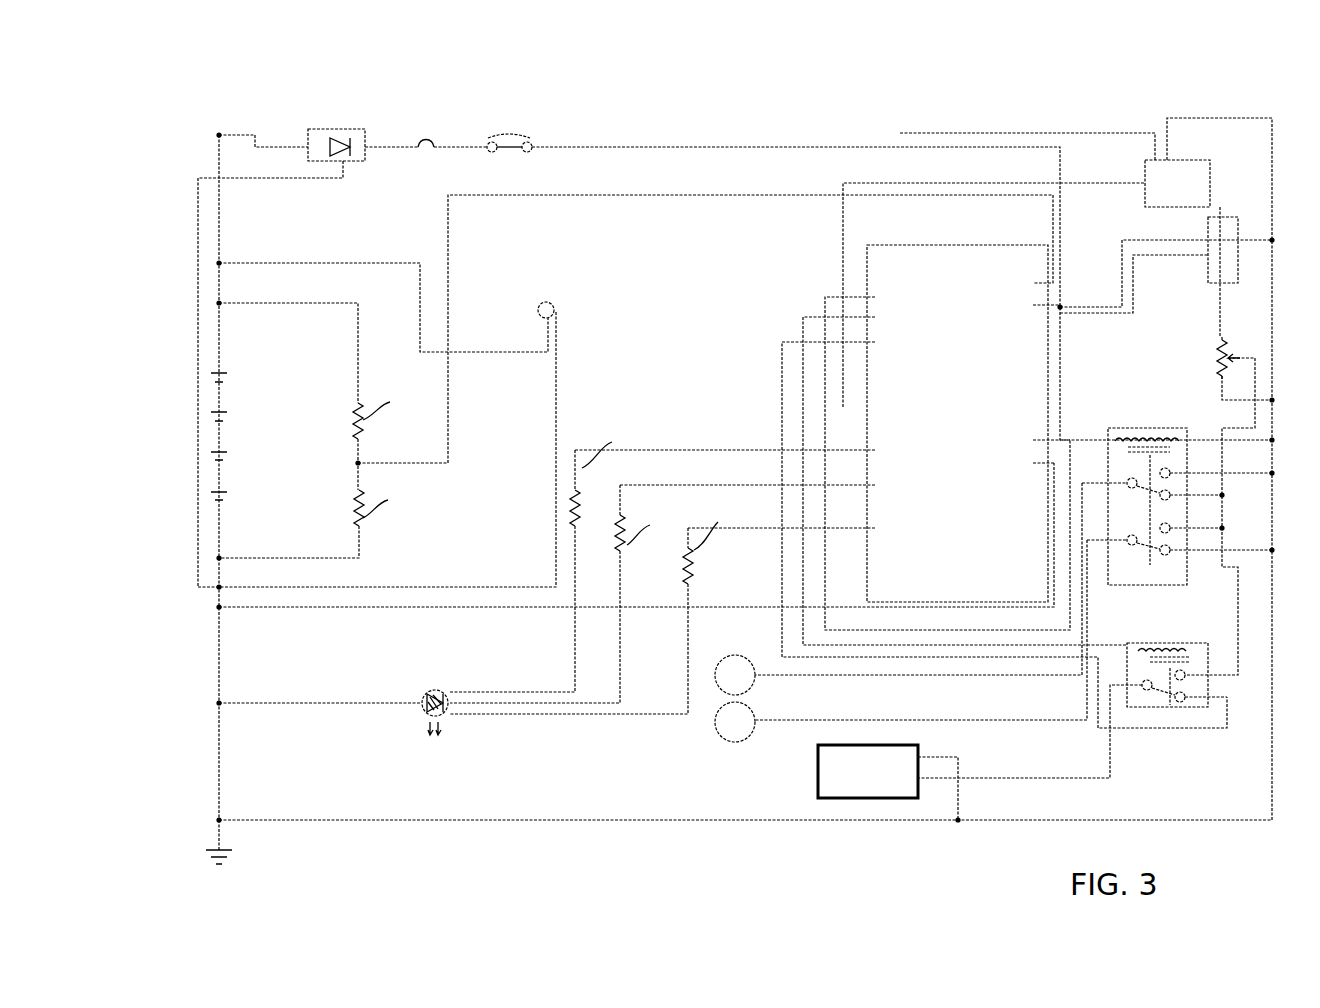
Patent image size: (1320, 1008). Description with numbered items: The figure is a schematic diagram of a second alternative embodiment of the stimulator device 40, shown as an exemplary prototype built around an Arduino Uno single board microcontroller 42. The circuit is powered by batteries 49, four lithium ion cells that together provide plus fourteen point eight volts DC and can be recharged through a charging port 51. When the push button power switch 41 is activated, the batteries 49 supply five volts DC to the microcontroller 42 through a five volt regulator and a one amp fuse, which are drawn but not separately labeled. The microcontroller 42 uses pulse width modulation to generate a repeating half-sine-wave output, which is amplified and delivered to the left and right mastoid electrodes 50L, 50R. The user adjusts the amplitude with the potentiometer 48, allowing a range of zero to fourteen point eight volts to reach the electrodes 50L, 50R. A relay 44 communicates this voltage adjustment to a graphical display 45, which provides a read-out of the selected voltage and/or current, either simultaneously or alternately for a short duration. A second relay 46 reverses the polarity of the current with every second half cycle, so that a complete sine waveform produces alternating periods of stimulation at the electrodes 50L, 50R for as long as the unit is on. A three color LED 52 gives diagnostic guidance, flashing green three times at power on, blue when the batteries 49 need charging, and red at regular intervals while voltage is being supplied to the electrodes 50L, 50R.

The stimulator device 40 is at (718, 98).
The push button power switch 41 is at (500, 132).
The single board microcontroller 42 is at (960, 346).
The relay 44 is at (1140, 690).
The graphical display 45 is at (832, 760).
The relay 46 is at (1160, 436).
The potentiometer 48 is at (1215, 368).
The batteries 49 is at (219, 492).
The left mastoid electrode 50L is at (742, 668).
The right mastoid electrode 50R is at (742, 724).
The charging port 51 is at (550, 303).
The three color LED 52 is at (438, 695).